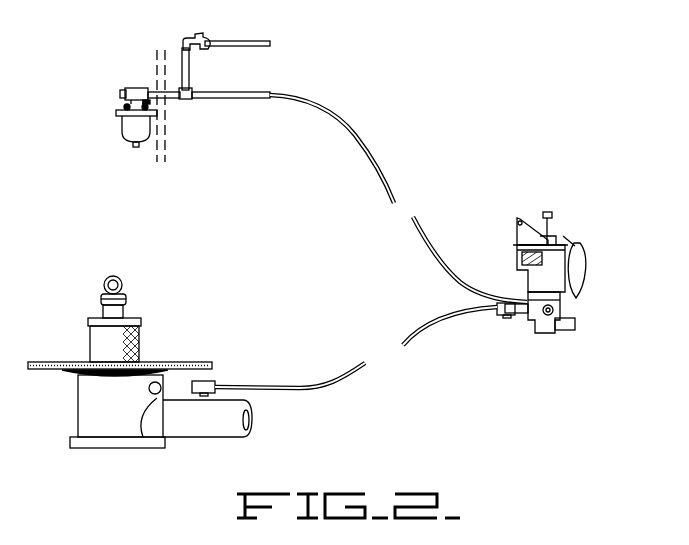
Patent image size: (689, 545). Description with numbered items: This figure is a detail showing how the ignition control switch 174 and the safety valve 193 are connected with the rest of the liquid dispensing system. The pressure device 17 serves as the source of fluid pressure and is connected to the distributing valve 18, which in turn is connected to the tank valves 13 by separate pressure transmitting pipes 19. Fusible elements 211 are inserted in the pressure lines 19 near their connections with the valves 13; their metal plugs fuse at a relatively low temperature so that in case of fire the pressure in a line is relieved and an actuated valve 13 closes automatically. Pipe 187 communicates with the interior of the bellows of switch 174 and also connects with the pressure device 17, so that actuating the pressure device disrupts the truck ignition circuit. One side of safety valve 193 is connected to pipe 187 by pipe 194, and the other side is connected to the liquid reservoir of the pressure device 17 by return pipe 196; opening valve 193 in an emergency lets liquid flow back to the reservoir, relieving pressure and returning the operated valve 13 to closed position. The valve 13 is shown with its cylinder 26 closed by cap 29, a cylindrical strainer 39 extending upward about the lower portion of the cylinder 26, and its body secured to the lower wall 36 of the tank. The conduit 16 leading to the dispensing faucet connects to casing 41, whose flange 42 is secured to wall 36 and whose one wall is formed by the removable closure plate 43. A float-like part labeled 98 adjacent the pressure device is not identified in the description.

The safety valve 193 is at (210, 40).
The return pipe 196 is at (268, 40).
The pipe 194 is at (189, 76).
The pipe 187 is at (272, 92).
The fusible elements 211 is at (135, 89).
The switch 174 is at (116, 128).
The pressure device 17 is at (548, 258).
The float 98 is at (582, 264).
The distributing valve 18 is at (560, 312).
The pressure transmitting pipes 19 is at (351, 378).
The cap 29 is at (126, 293).
The valves 13 is at (124, 308).
The sleeve or cylinder 26 is at (102, 311).
The cylindrical strainer 39 is at (95, 340).
The lower wall 36 is at (40, 372).
The flange 42 is at (66, 376).
The casing 41 is at (90, 415).
The closure plate 43 is at (116, 440).
The conduits 16 is at (199, 434).